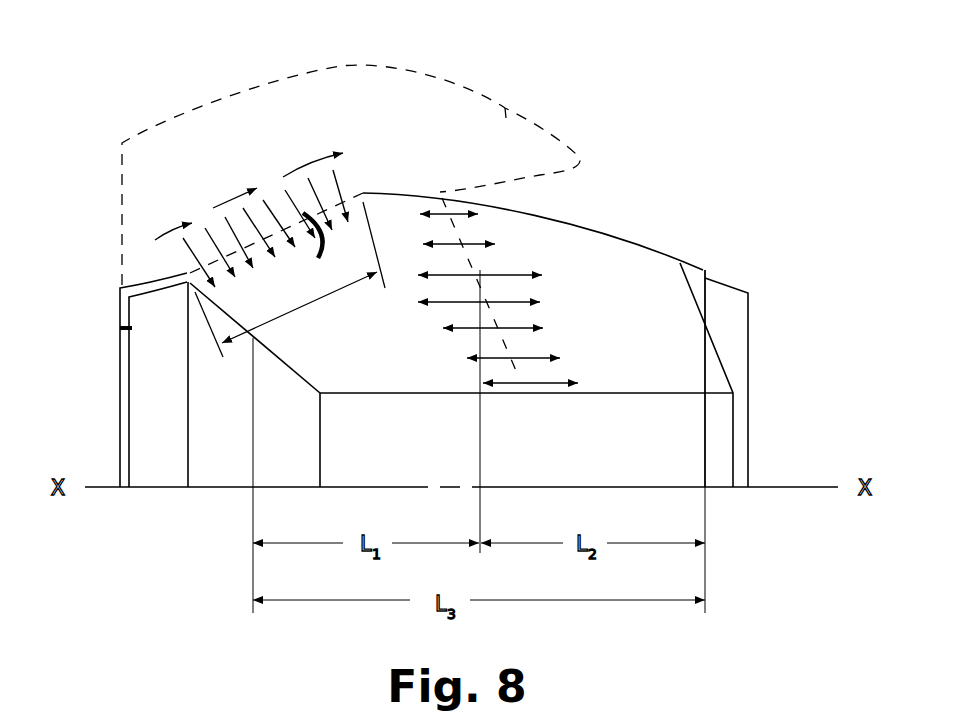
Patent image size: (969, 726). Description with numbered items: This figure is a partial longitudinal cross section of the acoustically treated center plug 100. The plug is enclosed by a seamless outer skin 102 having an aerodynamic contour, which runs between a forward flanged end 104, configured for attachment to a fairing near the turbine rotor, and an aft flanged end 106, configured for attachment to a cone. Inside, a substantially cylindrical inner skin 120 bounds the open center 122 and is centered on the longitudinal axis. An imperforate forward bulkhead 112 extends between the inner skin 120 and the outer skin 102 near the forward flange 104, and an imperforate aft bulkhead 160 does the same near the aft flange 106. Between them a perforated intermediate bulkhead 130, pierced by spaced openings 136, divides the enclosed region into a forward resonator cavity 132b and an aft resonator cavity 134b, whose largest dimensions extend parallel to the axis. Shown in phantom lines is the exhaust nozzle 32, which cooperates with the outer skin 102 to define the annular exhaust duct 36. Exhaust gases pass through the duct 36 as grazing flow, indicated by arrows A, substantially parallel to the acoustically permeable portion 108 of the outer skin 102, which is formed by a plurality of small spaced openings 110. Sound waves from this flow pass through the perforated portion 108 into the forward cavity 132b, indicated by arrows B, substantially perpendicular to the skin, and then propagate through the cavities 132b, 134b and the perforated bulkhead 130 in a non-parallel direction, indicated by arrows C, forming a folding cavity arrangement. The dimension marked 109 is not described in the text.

The exhaust nozzle 32 is at (417, 82).
The annular exhaust duct 36 is at (347, 139).
The center plug 100 is at (710, 220).
The outer skin 102 is at (593, 230).
The forward flanged end 104 is at (120, 302).
The aft flanged end 106 is at (733, 287).
The acoustically permeable portion 108 is at (218, 233).
The ramp length 109 is at (310, 302).
The spaced openings 110 is at (335, 241).
The forward bulkhead 112 is at (290, 368).
The inner skin 120 is at (550, 393).
The open center 122 is at (430, 463).
The perforated intermediate bulkhead 130 is at (460, 232).
The forward resonator cavity 132b is at (423, 239).
The aft resonator cavity 134b is at (522, 261).
The spaced openings 136 is at (460, 230).
The aft bulkhead 160 is at (720, 353).